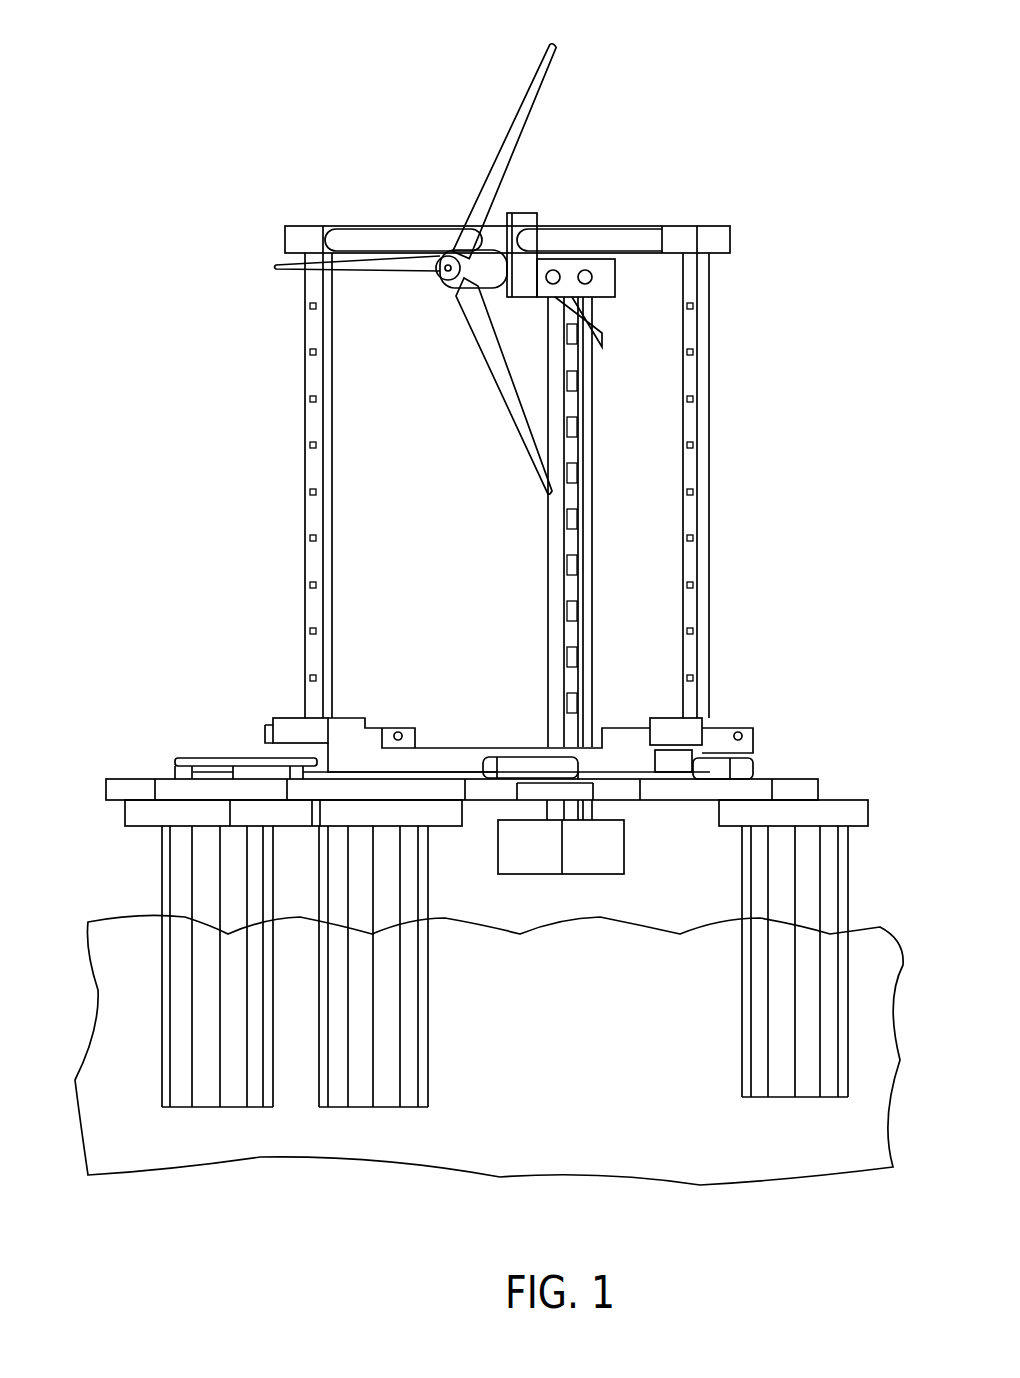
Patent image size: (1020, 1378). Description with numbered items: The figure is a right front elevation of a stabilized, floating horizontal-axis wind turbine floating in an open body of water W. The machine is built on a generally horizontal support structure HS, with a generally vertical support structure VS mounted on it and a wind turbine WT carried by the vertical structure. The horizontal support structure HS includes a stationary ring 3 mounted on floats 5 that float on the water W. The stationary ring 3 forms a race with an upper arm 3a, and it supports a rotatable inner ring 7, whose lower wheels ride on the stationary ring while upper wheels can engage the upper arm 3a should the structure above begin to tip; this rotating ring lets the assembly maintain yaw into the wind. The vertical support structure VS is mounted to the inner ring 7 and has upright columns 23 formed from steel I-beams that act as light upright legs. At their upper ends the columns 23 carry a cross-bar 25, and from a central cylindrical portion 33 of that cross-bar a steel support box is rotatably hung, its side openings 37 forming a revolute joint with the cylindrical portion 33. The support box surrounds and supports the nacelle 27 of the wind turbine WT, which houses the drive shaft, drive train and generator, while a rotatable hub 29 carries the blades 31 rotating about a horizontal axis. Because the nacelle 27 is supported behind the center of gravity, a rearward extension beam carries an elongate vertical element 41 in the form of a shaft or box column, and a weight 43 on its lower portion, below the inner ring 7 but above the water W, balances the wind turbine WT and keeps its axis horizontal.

The body of water W is at (125, 925).
The floats 5 is at (165, 868).
The generally horizontal support structure HS is at (108, 780).
The stationary ring 3 is at (818, 790).
The upper arm 3a is at (293, 762).
The rotatable inner ring 7 is at (478, 778).
The weight 43 is at (515, 856).
The generally vertical support structure VS is at (254, 431).
The cross-bar 25 is at (360, 227).
The upright columns 23 is at (310, 352).
The elongate vertical element 41 is at (570, 545).
The central cylindrical portion 33 is at (527, 237).
The wind turbine WT is at (468, 228).
The rotatable hub 29 is at (444, 278).
The openings 37 is at (522, 228).
The blades 31 is at (373, 272).
The nacelle 27 is at (474, 289).